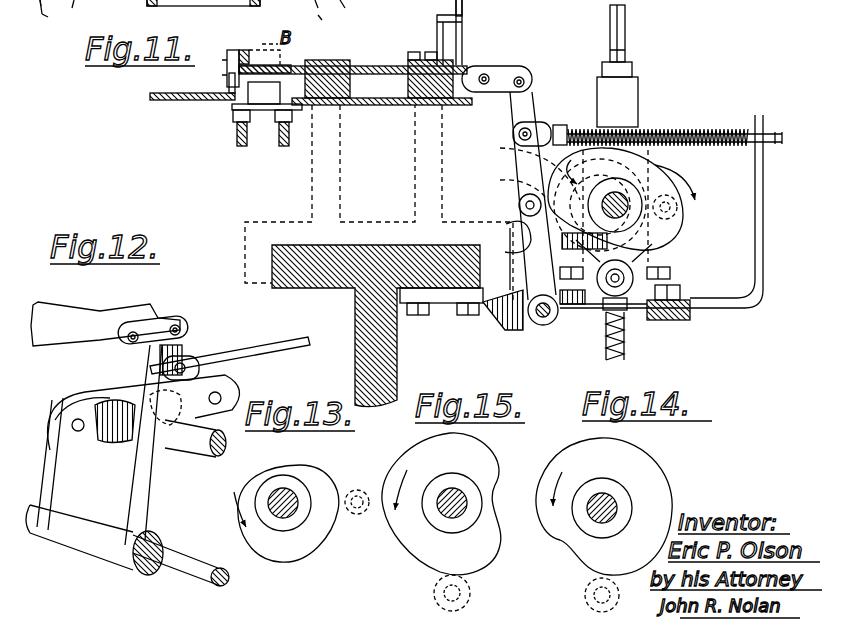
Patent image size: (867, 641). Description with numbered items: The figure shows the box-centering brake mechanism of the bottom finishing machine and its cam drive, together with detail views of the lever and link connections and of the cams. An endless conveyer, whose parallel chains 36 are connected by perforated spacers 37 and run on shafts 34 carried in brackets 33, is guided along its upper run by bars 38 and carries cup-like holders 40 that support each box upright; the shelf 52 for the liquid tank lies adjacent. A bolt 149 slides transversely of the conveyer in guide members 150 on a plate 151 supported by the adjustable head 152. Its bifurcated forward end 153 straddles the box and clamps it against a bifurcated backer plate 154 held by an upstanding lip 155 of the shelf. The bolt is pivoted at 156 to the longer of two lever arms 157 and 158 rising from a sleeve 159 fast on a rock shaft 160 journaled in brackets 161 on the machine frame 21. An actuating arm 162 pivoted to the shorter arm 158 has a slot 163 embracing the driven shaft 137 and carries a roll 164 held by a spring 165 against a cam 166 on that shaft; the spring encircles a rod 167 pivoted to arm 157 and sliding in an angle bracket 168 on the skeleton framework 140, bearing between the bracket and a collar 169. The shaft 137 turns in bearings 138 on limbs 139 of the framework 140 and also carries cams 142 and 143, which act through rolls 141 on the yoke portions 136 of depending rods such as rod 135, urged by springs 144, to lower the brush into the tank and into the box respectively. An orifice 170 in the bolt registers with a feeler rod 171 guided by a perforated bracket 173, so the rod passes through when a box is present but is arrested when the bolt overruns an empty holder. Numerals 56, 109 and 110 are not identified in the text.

In FIG. 11, the machine frame 21 is at (397, 332).
In FIG. 11, the bracket 33 is at (39, 23).
In FIG. 11, the shaft 34 is at (59, 16).
In FIG. 11, the conveyer chain 36 is at (279, 126).
In FIG. 11, the spacer 37 is at (233, 107).
In FIG. 11, the guide bar 38 is at (234, 138).
In FIG. 11, the holder 40 is at (268, 96).
In FIG. 11, the shelf 52 is at (152, 99).
In FIG. 11, the housing 56 is at (305, 6).
In FIG. 11, the shaft 109 is at (324, 25).
In FIG. 11, the arm 110 is at (359, 9).
In FIG. 11, the depending rod 135 is at (626, 36).
In FIG. 11, the yoke portion 136 is at (617, 94).
In FIG. 11, the driven shaft 137 is at (630, 205).
In FIG. 12, the driven shaft 137 is at (192, 456).
In FIG. 13, the driven shaft 137 is at (283, 510).
In FIG. 15, the driven shaft 137 is at (460, 496).
In FIG. 14, the driven shaft 137 is at (615, 500).
In FIG. 11, the bearing 138 is at (672, 278).
In FIG. 11, the limb 139 is at (590, 306).
In FIG. 11, the skeleton framework 140 is at (700, 318).
In FIG. 11, the roll 141 is at (660, 265).
In FIG. 15, the roll 141 is at (436, 604).
In FIG. 14, the roll 141 is at (590, 603).
In FIG. 14, the cam 142 is at (578, 540).
In FIG. 11, the cam 143 is at (656, 148).
In FIG. 15, the cam 143 is at (472, 548).
In FIG. 11, the spring 144 is at (628, 330).
In FIG. 11, the bolt 149 is at (382, 76).
In FIG. 12, the bolt 149 is at (45, 310).
In FIG. 11, the guide member 150 is at (333, 78).
In FIG. 11, the plate 151 is at (353, 103).
In FIG. 11, the adjustable head 152 is at (310, 187).
In FIG. 11, the bifurcated end 153 is at (238, 69).
In FIG. 11, the bifurcated plate 154 is at (248, 49).
In FIG. 11, the lip 155 is at (226, 49).
In FIG. 11, the pivotal connection 156 is at (526, 66).
In FIG. 12, the pivotal connection 156 is at (182, 326).
In FIG. 11, the lever arm 157 is at (533, 74).
In FIG. 12, the lever arm 157 is at (150, 518).
In FIG. 11, the lever arm 158 is at (520, 228).
In FIG. 12, the lever arm 158 is at (62, 485).
In FIG. 12, the sleeve 159 is at (90, 530).
In FIG. 11, the rock shaft 160 is at (544, 326).
In FIG. 12, the rock shaft 160 is at (208, 582).
In FIG. 11, the bracket 161 is at (511, 318).
In FIG. 11, the actuating arm 162 is at (525, 153).
In FIG. 12, the actuating arm 162 is at (108, 440).
In FIG. 11, the slot 163 is at (525, 173).
In FIG. 12, the slot 163 is at (100, 398).
In FIG. 11, the roll 164 is at (700, 229).
In FIG. 12, the roll 164 is at (200, 395).
In FIG. 13, the roll 164 is at (355, 515).
In FIG. 11, the spring 165 is at (706, 128).
In FIG. 11, the cam 166 is at (643, 130).
In FIG. 13, the cam 166 is at (308, 552).
In FIG. 11, the rod 167 is at (781, 135).
In FIG. 12, the rod 167 is at (300, 339).
In FIG. 11, the angle bracket 168 is at (746, 299).
In FIG. 11, the collar 169 is at (567, 122).
In FIG. 12, the collar 169 is at (200, 357).
In FIG. 11, the orifice 170 is at (432, 76).
In FIG. 11, the feeler rod 171 is at (462, 36).
In FIG. 11, the perforated bracket 173 is at (463, 16).